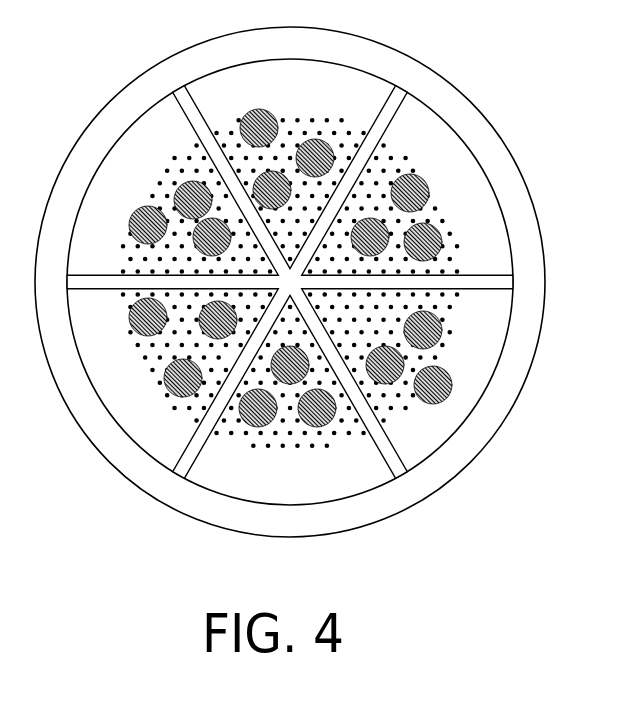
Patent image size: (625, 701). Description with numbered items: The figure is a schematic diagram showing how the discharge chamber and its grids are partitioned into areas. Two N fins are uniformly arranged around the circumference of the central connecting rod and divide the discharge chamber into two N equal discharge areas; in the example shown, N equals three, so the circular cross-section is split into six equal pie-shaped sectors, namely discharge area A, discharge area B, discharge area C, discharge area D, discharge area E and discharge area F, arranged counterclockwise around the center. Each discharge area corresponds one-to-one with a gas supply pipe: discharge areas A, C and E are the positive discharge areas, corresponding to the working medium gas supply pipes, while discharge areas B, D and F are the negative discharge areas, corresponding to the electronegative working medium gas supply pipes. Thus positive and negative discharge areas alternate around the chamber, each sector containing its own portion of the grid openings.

The discharge area A is at (183, 209).
The discharge area B is at (192, 358).
The discharge area C is at (290, 403).
The discharge area D is at (397, 358).
The discharge area E is at (392, 209).
The discharge area F is at (290, 162).